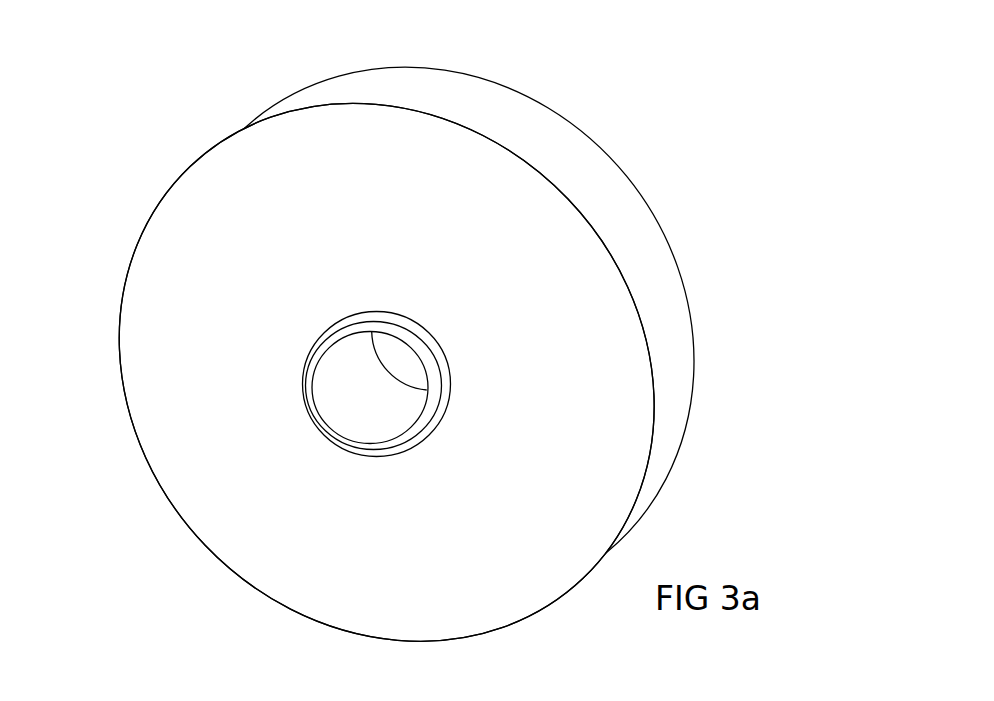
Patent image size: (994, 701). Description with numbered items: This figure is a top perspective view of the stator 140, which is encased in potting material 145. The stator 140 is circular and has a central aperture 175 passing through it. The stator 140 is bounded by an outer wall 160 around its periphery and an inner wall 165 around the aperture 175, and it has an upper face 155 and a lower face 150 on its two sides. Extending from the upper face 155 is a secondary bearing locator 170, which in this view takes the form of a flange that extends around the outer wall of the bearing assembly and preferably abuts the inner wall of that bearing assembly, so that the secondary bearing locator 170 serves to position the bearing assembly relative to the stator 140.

The stator 140 is at (603, 130).
The potting material 145 is at (625, 210).
The lower face 150 is at (250, 95).
The upper face 155 is at (238, 203).
The outer wall 160 is at (667, 287).
The inner wall 165 is at (362, 400).
The secondary bearing locator 170 is at (331, 338).
The aperture 175 is at (407, 365).